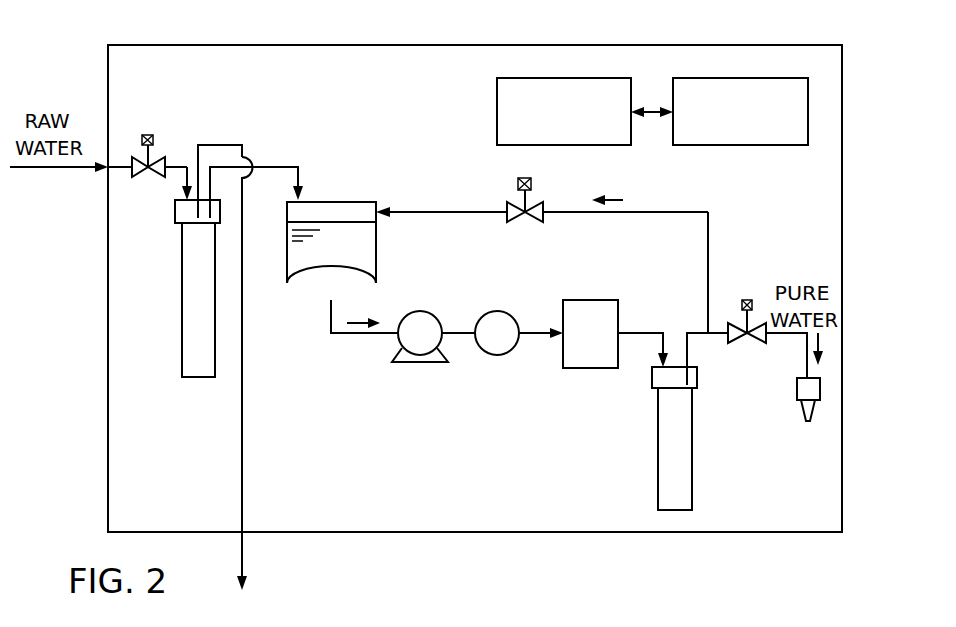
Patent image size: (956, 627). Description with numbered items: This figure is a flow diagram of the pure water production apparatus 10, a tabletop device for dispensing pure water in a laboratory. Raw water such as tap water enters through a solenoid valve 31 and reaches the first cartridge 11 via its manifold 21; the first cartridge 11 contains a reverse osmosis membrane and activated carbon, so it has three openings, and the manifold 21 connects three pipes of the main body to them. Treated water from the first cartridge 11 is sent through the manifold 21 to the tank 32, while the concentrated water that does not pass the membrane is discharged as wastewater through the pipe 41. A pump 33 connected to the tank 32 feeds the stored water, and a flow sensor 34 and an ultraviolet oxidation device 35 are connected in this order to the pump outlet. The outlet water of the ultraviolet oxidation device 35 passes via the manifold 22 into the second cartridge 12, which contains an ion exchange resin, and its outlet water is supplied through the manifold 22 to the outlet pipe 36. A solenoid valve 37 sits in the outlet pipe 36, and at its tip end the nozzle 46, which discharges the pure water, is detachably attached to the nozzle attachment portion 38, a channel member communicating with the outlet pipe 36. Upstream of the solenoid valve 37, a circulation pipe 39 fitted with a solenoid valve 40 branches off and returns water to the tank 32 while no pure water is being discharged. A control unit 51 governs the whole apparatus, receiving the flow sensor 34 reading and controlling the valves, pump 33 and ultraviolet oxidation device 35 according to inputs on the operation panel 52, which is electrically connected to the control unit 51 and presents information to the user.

The pure water production apparatus 10 is at (113, 73).
The first cartridge 11 is at (197, 377).
The second cartridge 12 is at (657, 467).
The manifold 21 is at (178, 212).
The manifold 22 is at (653, 382).
The solenoid valve 31 is at (153, 158).
The tank 32 is at (338, 202).
The pump 33 is at (420, 312).
The flow sensor 34 is at (498, 312).
The ultraviolet oxidation device 35 is at (593, 300).
The outlet pipe 36 is at (718, 337).
The solenoid valve 37 is at (757, 327).
The nozzle attachment portion 38 is at (800, 385).
The circulation pipe 39 is at (708, 233).
The solenoid valve 40 is at (508, 205).
The pipe 41 is at (243, 392).
The nozzle 46 is at (813, 410).
The control unit 51 is at (497, 110).
The operation panel 52 is at (785, 145).